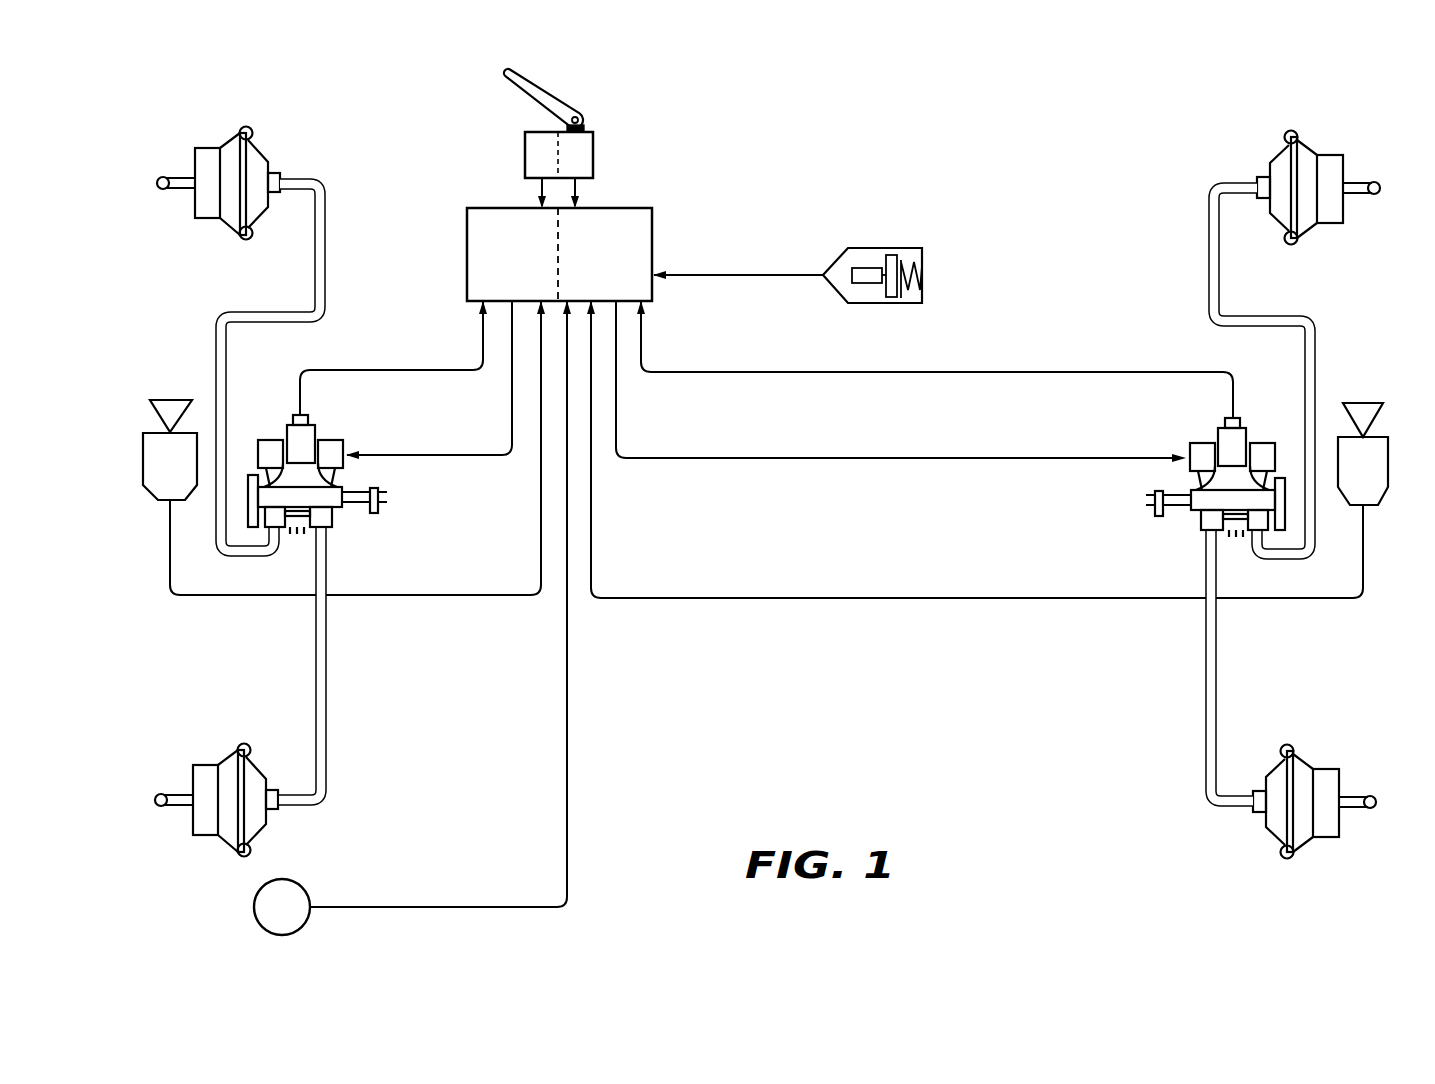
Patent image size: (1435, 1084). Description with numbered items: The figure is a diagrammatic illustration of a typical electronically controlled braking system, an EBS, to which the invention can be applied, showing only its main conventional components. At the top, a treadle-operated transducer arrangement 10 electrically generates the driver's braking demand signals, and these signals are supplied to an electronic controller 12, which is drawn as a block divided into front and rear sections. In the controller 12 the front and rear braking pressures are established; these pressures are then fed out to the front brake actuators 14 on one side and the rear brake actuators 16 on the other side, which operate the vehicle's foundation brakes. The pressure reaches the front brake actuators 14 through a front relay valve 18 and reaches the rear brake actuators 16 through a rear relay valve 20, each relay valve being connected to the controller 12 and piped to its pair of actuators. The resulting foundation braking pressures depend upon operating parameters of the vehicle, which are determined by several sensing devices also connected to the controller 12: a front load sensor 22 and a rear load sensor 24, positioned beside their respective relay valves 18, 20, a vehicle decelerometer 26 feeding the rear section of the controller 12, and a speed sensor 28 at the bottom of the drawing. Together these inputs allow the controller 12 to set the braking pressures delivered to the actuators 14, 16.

The treadle-operated transducer arrangement 10 is at (594, 157).
The electronic controller 12 is at (654, 233).
The front brake actuator 14 is at (263, 153).
The rear brake actuator 16 is at (1308, 218).
The front relay valve 18 is at (342, 355).
The rear relay valve 20 is at (1196, 357).
The front load sensor 22 is at (160, 492).
The rear load sensor 24 is at (1373, 499).
The vehicle decelerometer 26 is at (897, 250).
The speed sensor 28 is at (298, 890).